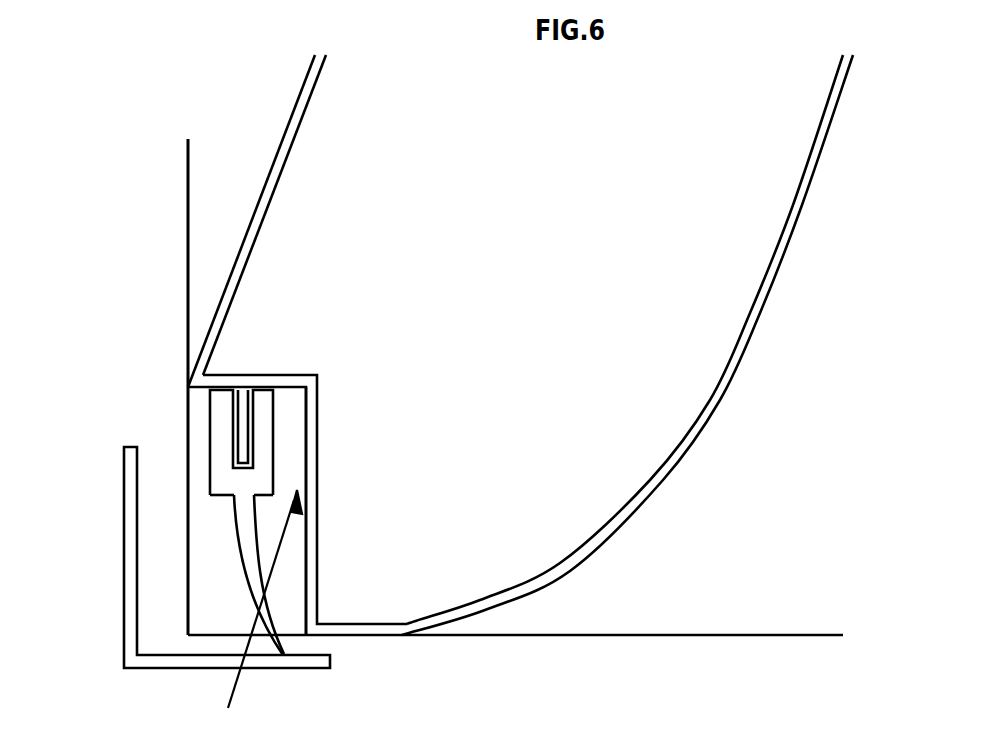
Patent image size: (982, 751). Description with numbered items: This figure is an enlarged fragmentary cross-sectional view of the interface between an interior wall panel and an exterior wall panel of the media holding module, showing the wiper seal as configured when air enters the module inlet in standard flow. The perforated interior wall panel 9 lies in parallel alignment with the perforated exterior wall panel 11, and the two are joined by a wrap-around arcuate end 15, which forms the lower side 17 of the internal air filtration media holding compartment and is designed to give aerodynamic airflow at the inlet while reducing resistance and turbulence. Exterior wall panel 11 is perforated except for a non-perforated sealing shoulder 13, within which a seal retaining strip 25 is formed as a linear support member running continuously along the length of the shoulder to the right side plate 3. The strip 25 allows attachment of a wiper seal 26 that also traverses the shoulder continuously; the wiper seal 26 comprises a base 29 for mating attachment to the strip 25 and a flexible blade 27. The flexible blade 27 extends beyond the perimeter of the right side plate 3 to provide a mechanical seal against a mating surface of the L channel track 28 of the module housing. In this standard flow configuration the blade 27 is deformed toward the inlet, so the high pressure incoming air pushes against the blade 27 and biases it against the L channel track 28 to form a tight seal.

The right side plate 3 is at (215, 578).
The interior wall panel 9 is at (793, 205).
The exterior wall panel 11 is at (292, 137).
The sealing shoulder 13 is at (228, 708).
The arcuate end 15 is at (635, 513).
The lower side 17 is at (507, 477).
The seal retaining strip 25 is at (243, 428).
The wiper seal 26 is at (193, 460).
The flexible blade 27 is at (275, 638).
The L channel track 28 is at (150, 660).
The base 29 is at (233, 485).